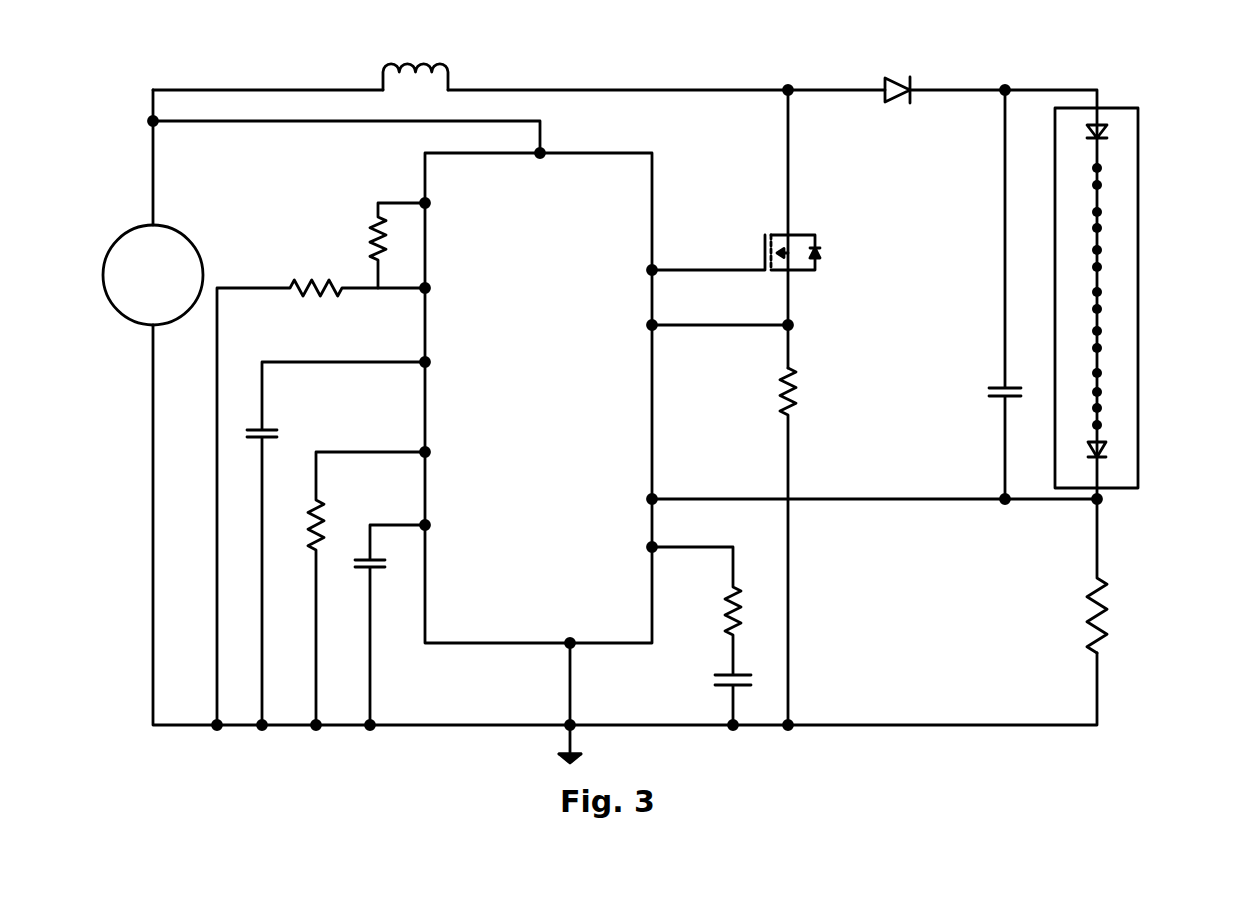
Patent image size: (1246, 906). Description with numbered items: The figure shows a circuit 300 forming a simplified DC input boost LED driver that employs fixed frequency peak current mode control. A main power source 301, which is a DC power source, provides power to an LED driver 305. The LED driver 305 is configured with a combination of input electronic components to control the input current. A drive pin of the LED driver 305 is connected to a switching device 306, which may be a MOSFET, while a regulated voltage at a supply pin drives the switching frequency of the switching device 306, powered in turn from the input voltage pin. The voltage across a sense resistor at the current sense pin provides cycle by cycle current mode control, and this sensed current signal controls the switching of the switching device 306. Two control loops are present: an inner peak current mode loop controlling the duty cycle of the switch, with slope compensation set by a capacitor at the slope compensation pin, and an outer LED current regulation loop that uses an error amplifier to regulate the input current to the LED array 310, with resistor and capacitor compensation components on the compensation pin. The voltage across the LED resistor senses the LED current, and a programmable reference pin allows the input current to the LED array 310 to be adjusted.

The circuit 300 is at (604, 57).
The main power source 301 is at (110, 304).
The LED driver 305 is at (580, 153).
The switching device 306 is at (780, 233).
The LED array 310 is at (1130, 155).